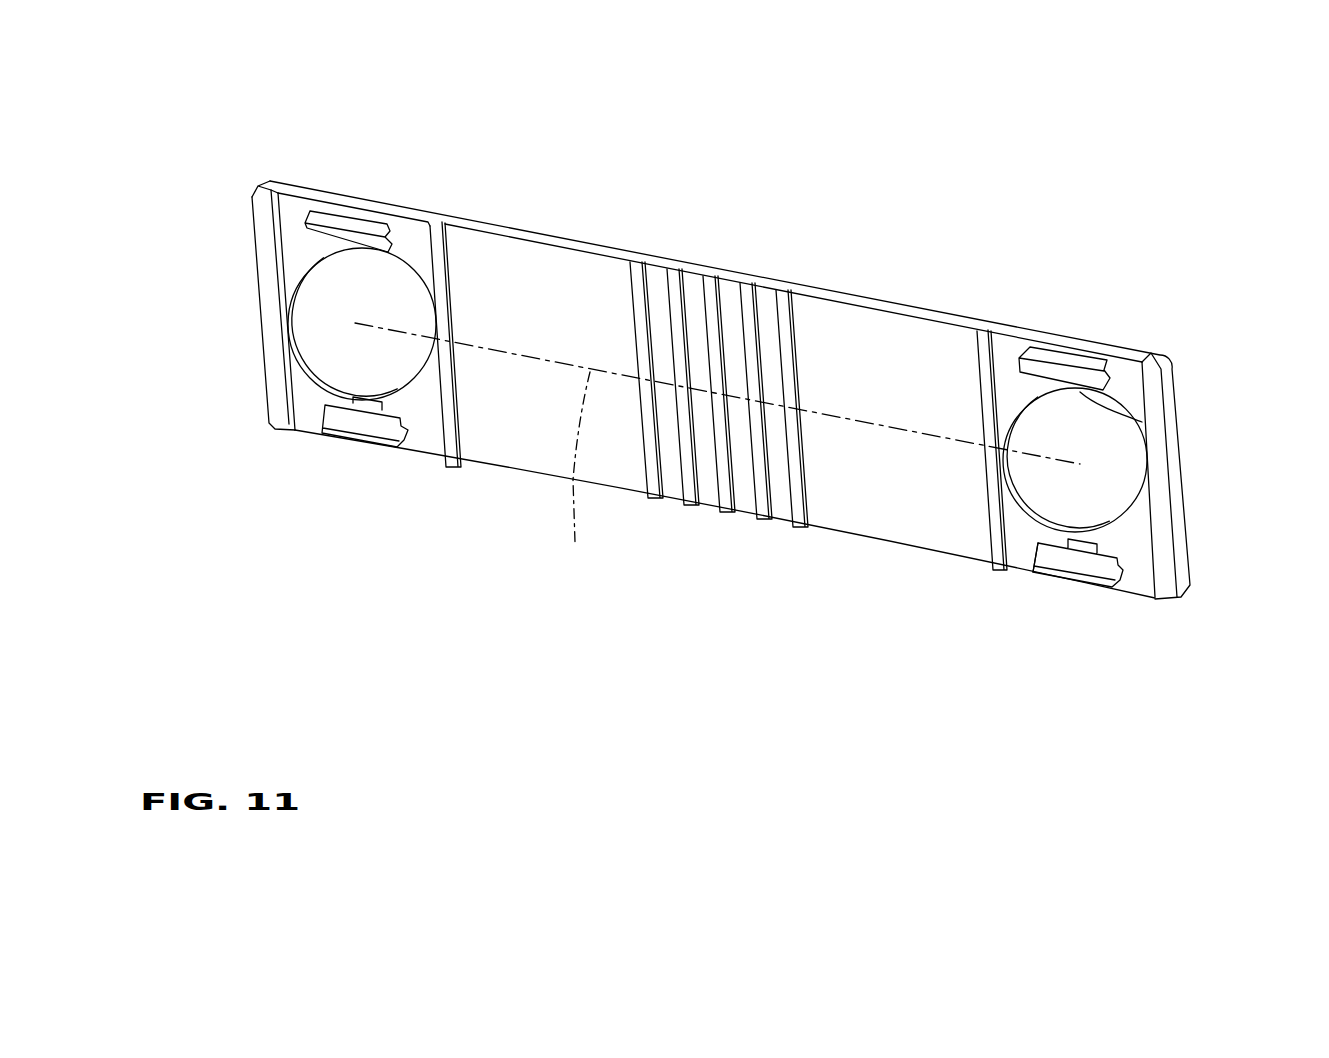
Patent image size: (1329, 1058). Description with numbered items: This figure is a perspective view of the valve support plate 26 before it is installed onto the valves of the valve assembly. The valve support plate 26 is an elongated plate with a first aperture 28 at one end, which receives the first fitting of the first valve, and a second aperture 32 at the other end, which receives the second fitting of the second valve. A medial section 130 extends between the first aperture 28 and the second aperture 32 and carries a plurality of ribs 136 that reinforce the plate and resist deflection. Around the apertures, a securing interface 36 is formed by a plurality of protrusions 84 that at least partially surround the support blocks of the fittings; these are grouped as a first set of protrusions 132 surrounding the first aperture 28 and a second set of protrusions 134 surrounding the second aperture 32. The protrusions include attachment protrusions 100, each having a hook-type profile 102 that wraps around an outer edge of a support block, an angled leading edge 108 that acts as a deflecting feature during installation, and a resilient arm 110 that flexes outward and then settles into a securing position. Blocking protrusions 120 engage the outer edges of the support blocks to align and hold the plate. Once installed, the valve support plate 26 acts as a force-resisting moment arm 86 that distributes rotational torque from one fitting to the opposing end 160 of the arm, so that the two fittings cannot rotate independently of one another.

The securing interface 36 is at (1154, 343).
The opposing end 160 is at (258, 313).
The valve support plate 26 is at (509, 477).
The moment arm 86 is at (577, 475).
The plurality of protrusions 84 is at (453, 248).
The blocking protrusions 120 is at (979, 330).
The plurality of ribs 136 is at (672, 274).
The medial section 130 is at (800, 310).
The second aperture 32 is at (333, 368).
The first aperture 28 is at (1075, 532).
The angled leading edge 108 is at (1142, 422).
The attachment protrusions 100 is at (367, 220).
The resilient arm 110 is at (1062, 365).
The second set of protrusions 134 is at (340, 452).
The first set of protrusions 132 is at (1082, 590).
The hook-type profile 102 is at (1032, 562).